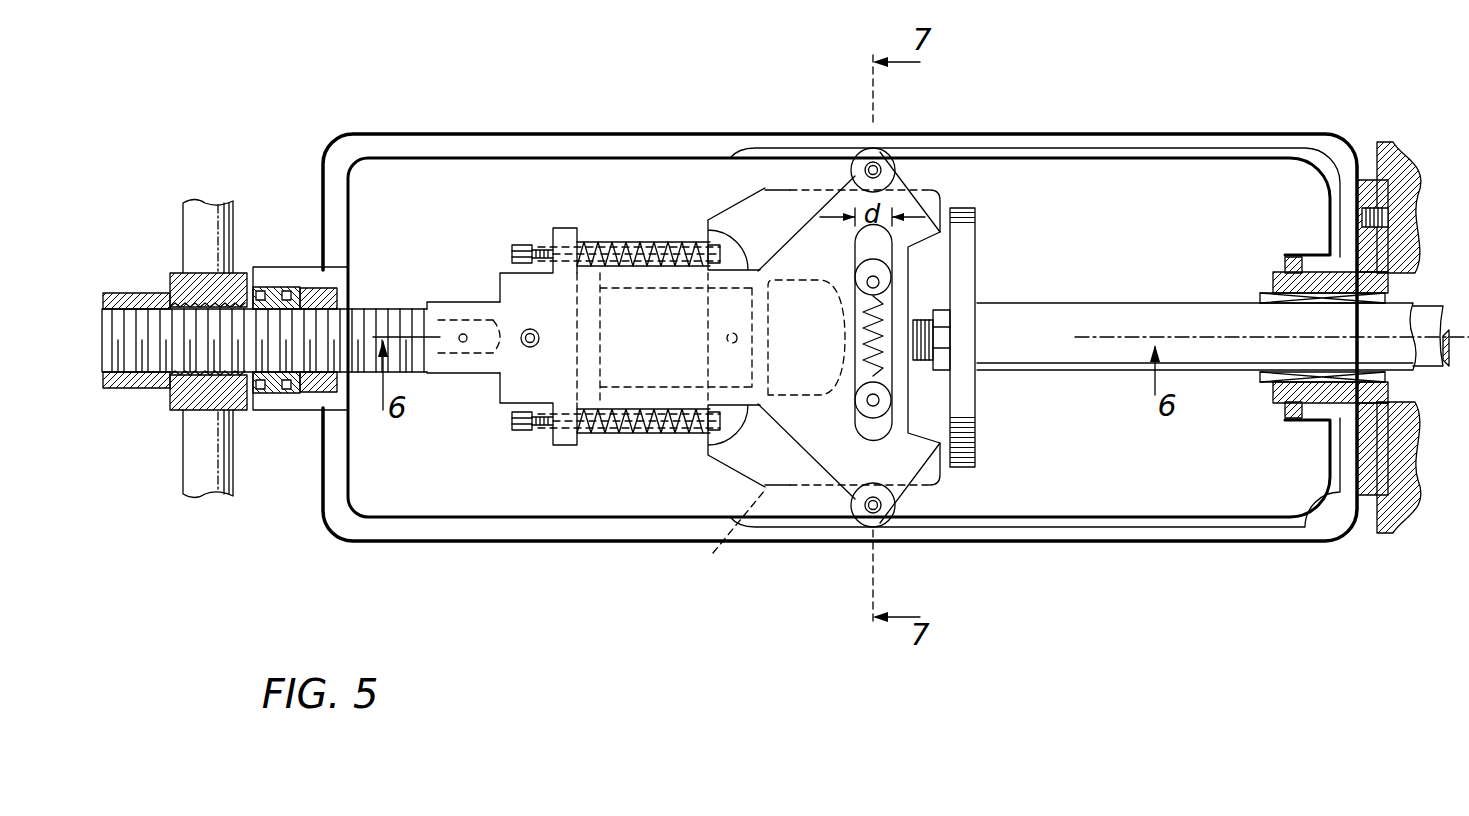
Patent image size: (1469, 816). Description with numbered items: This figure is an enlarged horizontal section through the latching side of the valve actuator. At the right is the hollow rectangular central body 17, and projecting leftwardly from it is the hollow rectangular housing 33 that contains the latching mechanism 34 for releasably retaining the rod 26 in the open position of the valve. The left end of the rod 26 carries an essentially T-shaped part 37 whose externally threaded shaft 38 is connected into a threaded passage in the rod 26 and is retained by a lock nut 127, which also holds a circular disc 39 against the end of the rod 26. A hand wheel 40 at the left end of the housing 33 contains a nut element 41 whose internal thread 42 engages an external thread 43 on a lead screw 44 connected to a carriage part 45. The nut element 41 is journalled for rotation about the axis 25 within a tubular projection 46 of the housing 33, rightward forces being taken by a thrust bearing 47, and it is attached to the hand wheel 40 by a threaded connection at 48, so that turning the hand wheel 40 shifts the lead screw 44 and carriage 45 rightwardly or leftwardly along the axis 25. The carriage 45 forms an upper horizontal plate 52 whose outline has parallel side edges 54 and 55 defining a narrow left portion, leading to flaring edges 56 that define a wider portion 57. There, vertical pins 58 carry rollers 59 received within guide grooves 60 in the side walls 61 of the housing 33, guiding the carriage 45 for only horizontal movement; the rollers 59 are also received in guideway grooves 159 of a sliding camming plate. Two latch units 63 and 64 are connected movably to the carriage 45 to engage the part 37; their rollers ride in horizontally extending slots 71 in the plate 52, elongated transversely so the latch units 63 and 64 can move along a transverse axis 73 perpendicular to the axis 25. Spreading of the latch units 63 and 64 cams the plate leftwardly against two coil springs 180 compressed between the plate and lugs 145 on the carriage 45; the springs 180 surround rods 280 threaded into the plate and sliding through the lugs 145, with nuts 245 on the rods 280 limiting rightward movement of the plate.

The central body 17 is at (1402, 196).
The axis 25 is at (1412, 308).
The rod 26 is at (1160, 305).
The housing 33 is at (1079, 130).
The latching mechanism 34 is at (745, 190).
The T-shaped part 37 is at (822, 345).
The externally threaded shaft 38 is at (952, 302).
The circular disc 39 is at (965, 408).
The hand wheel 40 is at (208, 200).
The nut element 41 is at (290, 395).
The internal thread 42 is at (365, 310).
The external thread 43 is at (408, 304).
The lead screw 44 is at (423, 375).
The carriage part 45 is at (500, 290).
The tubular projection 46 is at (283, 268).
The thrust bearing 47 is at (343, 390).
The threaded connection 48 is at (190, 292).
The upper horizontal plate 52 is at (830, 460).
The side edge 54 is at (715, 220).
The side edge 55 is at (708, 448).
The flaring edges 56 is at (800, 240).
The wider portion 57 is at (900, 210).
The vertical pins 58 is at (888, 150).
The rollers 59 is at (858, 152).
The guide grooves 60 is at (780, 148).
The side walls 61 is at (988, 134).
The latch unit 63 is at (893, 400).
The latch unit 64 is at (855, 286).
The slot 71 is at (885, 255).
The transverse axis 73 is at (915, 447).
The lock nut 127 is at (950, 340).
The lugs 145 is at (553, 226).
The guideway grooves 159 is at (725, 536).
The coil springs 180 is at (643, 245).
The nuts 245 is at (518, 432).
The rods 280 is at (600, 245).